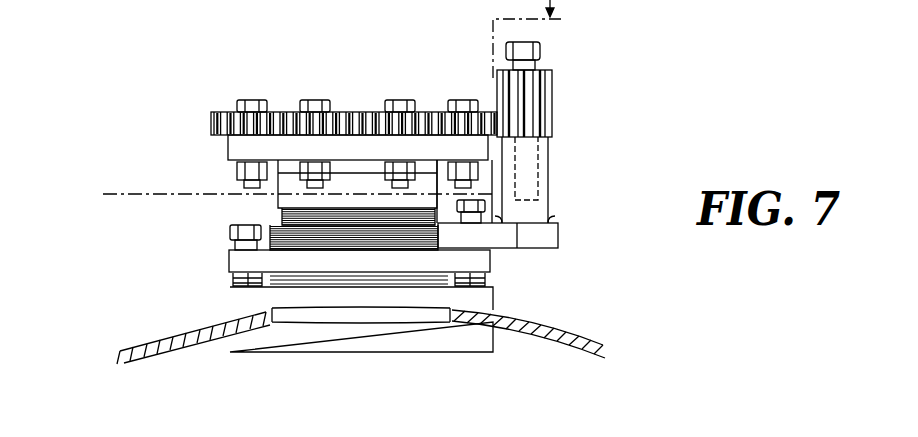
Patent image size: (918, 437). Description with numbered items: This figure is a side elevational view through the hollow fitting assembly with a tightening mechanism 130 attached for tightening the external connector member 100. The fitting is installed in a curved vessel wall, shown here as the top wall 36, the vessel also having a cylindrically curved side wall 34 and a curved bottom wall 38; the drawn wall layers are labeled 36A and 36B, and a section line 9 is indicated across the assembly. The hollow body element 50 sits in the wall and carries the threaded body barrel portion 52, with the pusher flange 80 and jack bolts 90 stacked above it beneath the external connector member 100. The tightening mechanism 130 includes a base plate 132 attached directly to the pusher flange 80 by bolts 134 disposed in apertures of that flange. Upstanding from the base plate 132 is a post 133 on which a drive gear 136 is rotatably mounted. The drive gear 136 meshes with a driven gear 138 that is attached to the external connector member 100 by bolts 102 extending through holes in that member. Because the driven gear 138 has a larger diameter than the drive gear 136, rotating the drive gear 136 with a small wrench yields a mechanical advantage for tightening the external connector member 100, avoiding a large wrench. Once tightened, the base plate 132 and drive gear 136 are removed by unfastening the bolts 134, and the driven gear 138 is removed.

The section line 9 is at (122, 188).
The top wall 36 is at (614, 331).
The side wall 34 is at (528, 334).
The bottom wall 38 is at (607, 329).
The belt upper layer 36A is at (145, 343).
The belt lower layer 36B is at (166, 355).
The hollow body element 50 is at (459, 356).
The body barrel portion 52 is at (277, 219).
The pusher flange 80 is at (221, 261).
The jack bolts 90 is at (221, 231).
The external connector member 100 is at (222, 148).
The bolts 102 is at (463, 97).
The tightening mechanism 130 is at (564, 157).
The base plate 132 is at (540, 235).
The post 133 is at (548, 188).
The bolts 134 is at (463, 218).
The drive gear 136 is at (553, 95).
The driven gear 138 is at (208, 122).